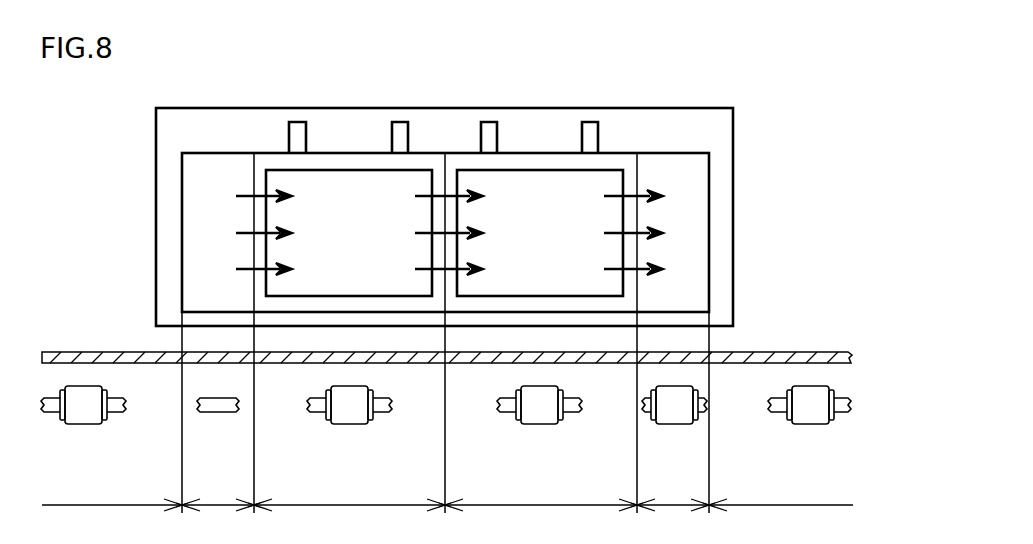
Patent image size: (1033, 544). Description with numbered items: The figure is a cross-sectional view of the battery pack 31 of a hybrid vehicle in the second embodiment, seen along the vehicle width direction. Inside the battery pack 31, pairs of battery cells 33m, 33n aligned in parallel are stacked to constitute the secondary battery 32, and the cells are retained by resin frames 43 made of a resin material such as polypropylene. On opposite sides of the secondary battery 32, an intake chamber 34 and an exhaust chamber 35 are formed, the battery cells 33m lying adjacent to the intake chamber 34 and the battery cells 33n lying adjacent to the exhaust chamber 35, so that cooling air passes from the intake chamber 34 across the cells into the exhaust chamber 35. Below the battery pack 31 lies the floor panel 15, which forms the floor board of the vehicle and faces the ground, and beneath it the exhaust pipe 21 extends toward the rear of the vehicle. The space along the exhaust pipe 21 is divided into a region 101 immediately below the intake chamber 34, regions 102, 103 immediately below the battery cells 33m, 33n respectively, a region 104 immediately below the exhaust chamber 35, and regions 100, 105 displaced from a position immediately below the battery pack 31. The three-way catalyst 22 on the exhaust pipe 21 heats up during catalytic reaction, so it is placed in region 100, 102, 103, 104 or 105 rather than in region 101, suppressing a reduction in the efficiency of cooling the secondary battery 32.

The floor panel 15 is at (800, 350).
The exhaust pipe 21 is at (843, 412).
The three-way catalyst 22 is at (810, 424).
The battery pack 31 is at (199, 108).
The secondary battery 32 is at (622, 139).
The battery cells 33m is at (360, 168).
The battery cells 33n is at (543, 169).
The intake chamber 34 is at (203, 216).
The exhaust chamber 35 is at (688, 217).
The resin frames 43 is at (326, 163).
The region 100 is at (115, 494).
The region 101 is at (218, 494).
The region 102 is at (349, 494).
The region 103 is at (541, 494).
The region 104 is at (673, 494).
The region 105 is at (778, 494).